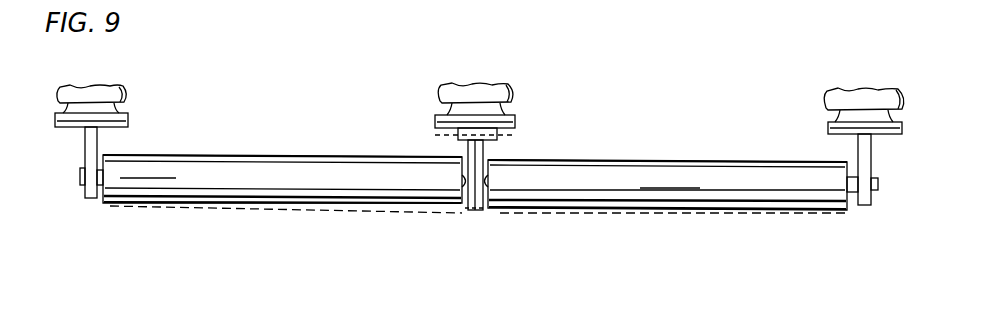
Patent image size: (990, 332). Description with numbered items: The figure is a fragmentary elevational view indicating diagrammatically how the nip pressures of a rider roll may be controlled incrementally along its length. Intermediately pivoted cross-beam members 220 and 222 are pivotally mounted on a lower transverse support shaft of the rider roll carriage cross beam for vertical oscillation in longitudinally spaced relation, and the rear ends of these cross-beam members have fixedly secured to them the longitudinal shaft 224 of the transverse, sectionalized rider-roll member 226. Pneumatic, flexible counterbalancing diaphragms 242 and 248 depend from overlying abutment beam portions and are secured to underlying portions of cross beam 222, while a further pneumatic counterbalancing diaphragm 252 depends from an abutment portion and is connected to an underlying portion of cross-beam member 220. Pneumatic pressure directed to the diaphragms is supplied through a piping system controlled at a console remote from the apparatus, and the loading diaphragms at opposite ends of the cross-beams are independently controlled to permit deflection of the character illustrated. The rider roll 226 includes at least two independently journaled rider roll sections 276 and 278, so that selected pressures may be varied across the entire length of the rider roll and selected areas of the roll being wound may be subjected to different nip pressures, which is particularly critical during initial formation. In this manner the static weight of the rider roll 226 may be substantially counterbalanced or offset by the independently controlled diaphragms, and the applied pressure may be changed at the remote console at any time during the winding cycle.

The cross-beam member 220 is at (490, 154).
The cross-beam member 222 is at (864, 154).
The longitudinal shaft 224 is at (879, 183).
The rider-roll member 226 is at (428, 205).
The counterbalancing diaphragm 242 is at (120, 94).
The counterbalancing diaphragm 248 is at (824, 100).
The counterbalancing diaphragm 252 is at (437, 108).
The rider roll section 276 is at (218, 183).
The rider roll section 278 is at (627, 214).